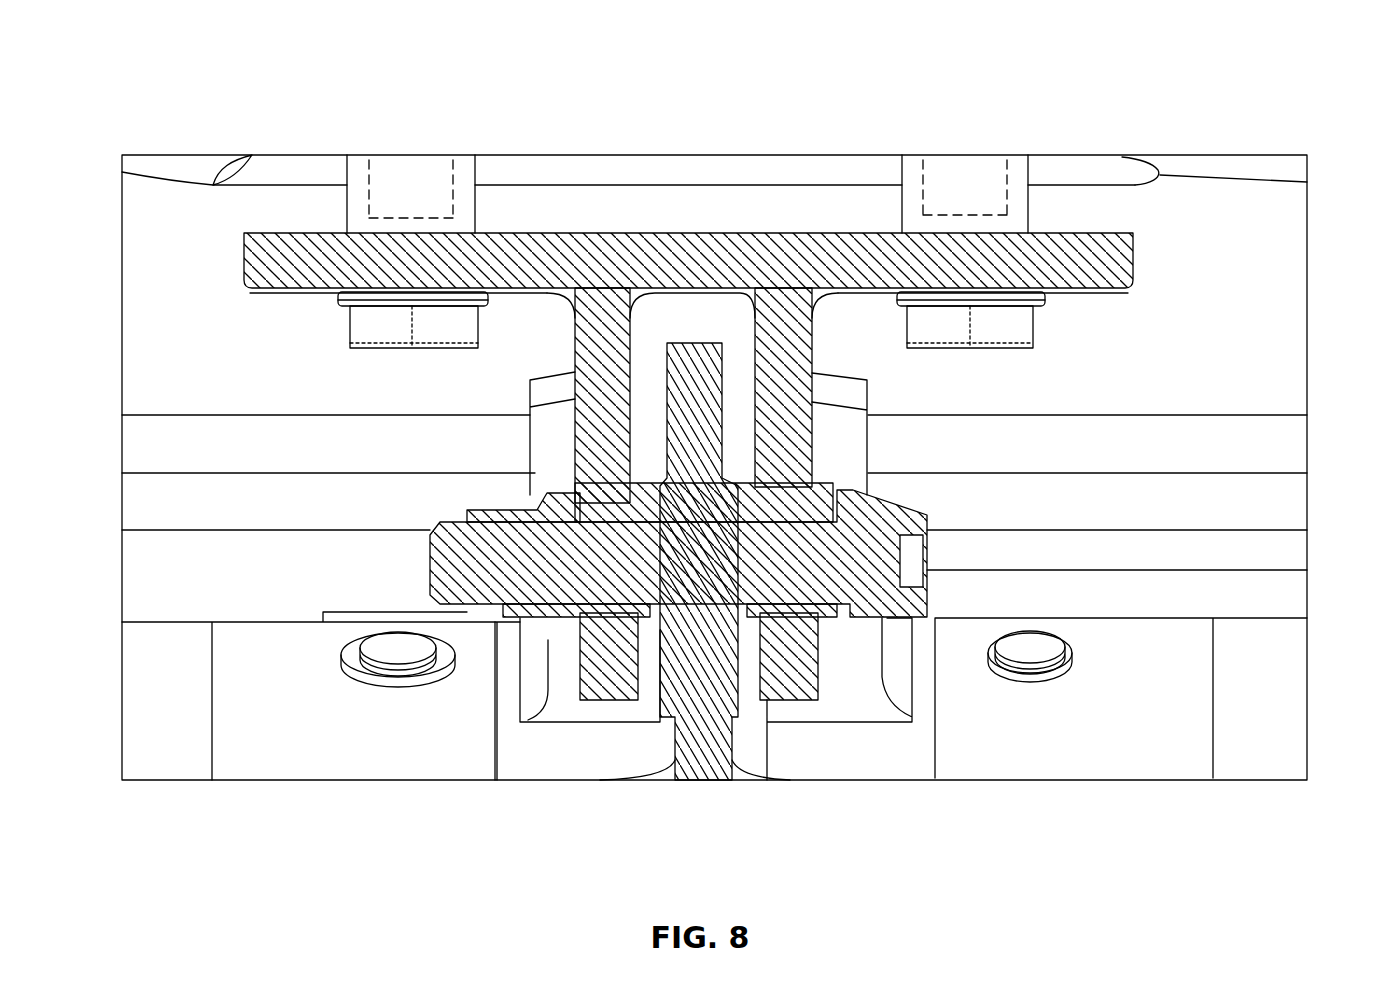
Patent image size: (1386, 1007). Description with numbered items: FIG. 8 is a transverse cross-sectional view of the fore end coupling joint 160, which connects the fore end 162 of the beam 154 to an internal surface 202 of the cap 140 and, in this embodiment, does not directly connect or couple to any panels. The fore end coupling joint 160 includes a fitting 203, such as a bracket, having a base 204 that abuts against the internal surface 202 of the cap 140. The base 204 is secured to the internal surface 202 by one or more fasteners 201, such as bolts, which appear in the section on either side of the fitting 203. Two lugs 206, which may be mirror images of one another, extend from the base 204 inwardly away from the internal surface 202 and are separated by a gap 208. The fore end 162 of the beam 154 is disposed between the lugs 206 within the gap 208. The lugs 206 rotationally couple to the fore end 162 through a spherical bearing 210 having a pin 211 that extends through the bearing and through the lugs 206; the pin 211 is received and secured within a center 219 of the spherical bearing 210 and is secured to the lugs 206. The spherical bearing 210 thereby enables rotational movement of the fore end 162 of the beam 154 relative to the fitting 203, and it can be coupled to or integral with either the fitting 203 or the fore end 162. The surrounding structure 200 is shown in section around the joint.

The cap 140 is at (1178, 173).
The beam 154 is at (687, 763).
The fore end coupling joint 160 is at (178, 326).
The fore end 162 is at (717, 337).
The mounting structure 200 is at (1165, 804).
The fastener 201 is at (377, 332).
The internal surface 202 is at (1128, 230).
The fitting 203 is at (1057, 257).
The base 204 is at (1133, 265).
The lug 206 is at (793, 357).
The gap 208 is at (687, 323).
The spherical bearing 210 is at (868, 462).
The pin 211 is at (927, 517).
The center 219 is at (632, 323).